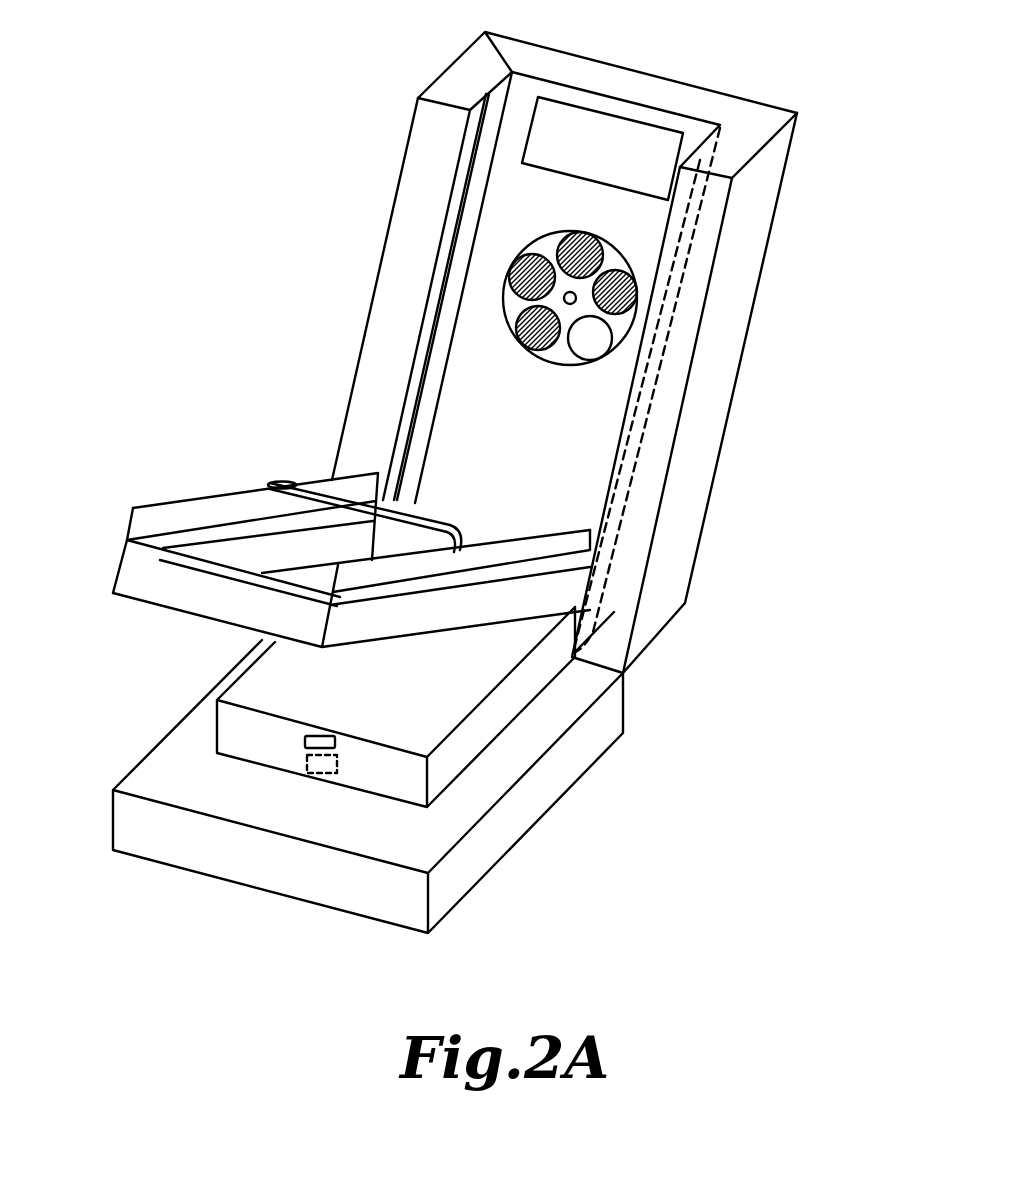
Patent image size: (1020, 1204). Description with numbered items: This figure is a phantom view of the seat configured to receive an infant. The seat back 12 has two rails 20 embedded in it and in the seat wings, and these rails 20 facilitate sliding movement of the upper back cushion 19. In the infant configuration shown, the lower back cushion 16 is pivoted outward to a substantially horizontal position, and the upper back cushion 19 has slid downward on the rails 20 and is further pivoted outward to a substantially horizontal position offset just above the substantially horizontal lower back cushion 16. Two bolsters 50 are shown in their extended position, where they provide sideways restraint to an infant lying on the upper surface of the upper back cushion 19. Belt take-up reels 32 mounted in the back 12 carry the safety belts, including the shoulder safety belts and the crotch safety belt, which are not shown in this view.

The back 12 is at (743, 262).
The lower back cushion 16 is at (490, 665).
The upper back cushion 19 is at (157, 582).
The rails 20 is at (483, 132).
The belt take-up reels 32 is at (622, 304).
The bolsters 50 is at (210, 518).